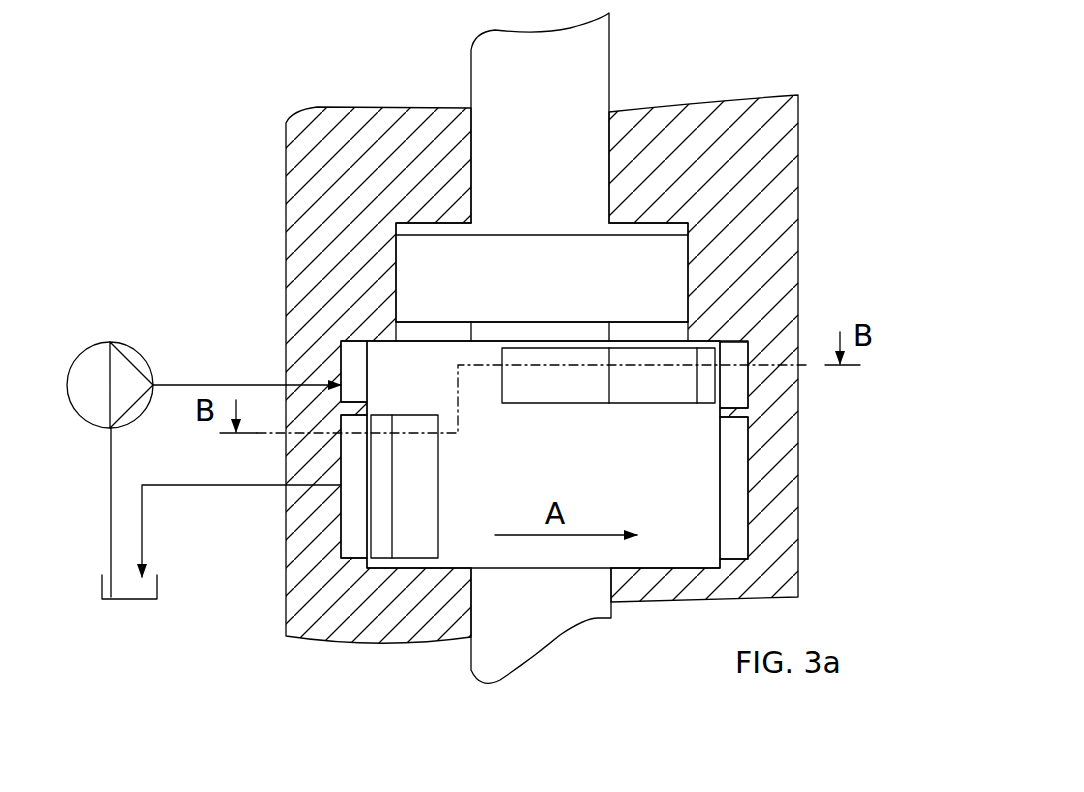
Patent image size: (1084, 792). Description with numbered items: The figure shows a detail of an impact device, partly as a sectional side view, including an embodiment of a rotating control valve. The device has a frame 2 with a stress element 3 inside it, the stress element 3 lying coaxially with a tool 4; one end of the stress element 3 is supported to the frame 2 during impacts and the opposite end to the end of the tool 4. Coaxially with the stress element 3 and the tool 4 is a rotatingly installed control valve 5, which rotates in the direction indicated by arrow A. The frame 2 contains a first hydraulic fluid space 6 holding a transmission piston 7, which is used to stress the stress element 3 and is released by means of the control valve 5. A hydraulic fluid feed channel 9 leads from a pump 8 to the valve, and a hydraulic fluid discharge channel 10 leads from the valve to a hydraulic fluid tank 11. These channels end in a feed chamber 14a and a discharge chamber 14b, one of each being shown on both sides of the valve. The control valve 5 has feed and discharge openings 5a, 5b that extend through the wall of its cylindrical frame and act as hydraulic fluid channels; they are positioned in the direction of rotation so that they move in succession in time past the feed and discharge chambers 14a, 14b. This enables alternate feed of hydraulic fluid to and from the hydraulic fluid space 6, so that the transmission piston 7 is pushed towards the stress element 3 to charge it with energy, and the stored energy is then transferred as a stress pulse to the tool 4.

The frame 2 is at (286, 150).
The stress element 3 is at (530, 161).
The tool 4 is at (518, 650).
The control valve 5 is at (576, 466).
The feed openings 5a is at (583, 400).
The discharge openings 5b is at (430, 521).
The first hydraulic fluid space 6 is at (662, 333).
The transmission piston 7 is at (568, 290).
The pump 8 is at (108, 342).
The hydraulic fluid feed channel 9 is at (247, 383).
The hydraulic fluid discharge channel 10 is at (160, 488).
The hydraulic fluid tank 11 is at (157, 583).
The feed chamber 14a is at (350, 338).
The discharge chamber 14b is at (360, 534).